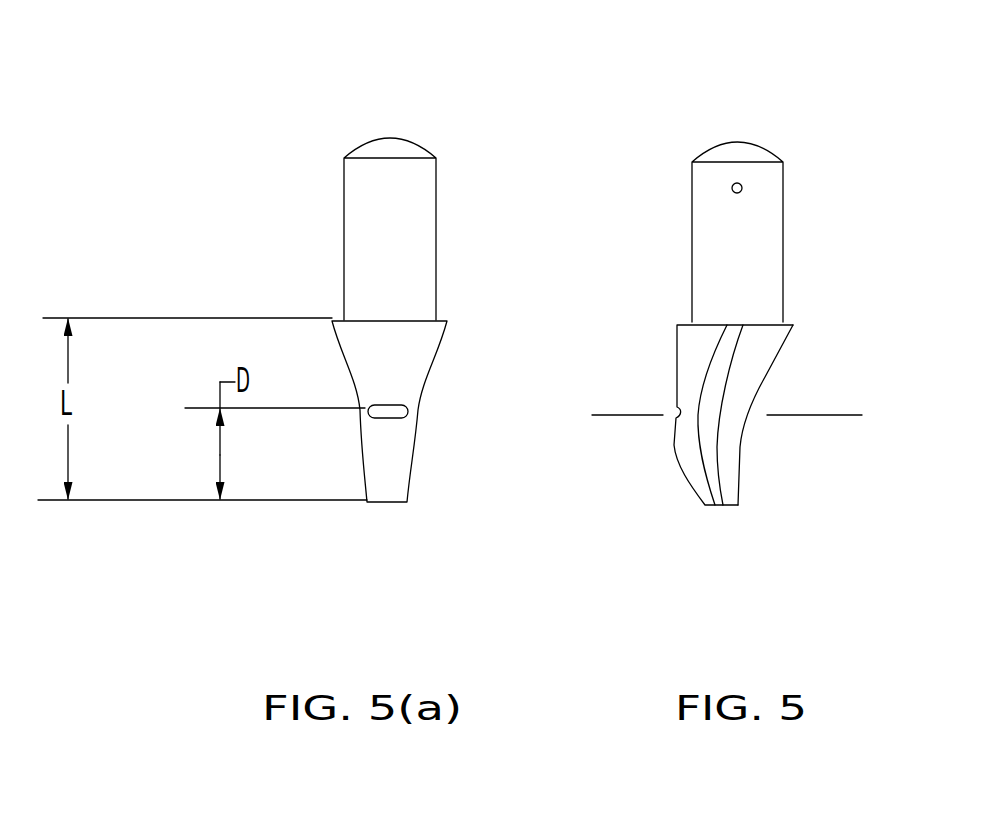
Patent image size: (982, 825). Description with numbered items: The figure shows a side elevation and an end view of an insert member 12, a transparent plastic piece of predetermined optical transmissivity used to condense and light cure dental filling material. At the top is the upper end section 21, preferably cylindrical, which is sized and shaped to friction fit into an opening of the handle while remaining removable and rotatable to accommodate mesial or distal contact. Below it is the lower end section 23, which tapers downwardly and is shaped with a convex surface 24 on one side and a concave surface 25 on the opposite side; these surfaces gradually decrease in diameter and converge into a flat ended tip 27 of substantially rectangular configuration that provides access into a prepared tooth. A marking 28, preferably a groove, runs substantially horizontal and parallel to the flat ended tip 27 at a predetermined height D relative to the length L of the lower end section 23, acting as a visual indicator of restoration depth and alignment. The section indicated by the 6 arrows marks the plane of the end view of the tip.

In FIG. 5A, the insert member 12 is at (390, 321).
In FIG. 5, the insert member 12 is at (718, 338).
In FIG. 5A, the upper end section 21 is at (390, 229).
In FIG. 5, the upper end section 21 is at (737, 232).
In FIG. 5A, the lower end section 23 is at (418, 357).
In FIG. 5A, the marking 28 is at (383, 418).
In FIG. 5, the convex surface 24 is at (683, 475).
In FIG. 5, the concave surface 25 is at (747, 450).
In FIG. 5, the flat ended tip 27 is at (722, 505).
In FIG. 5, the section line 6- 6 is at (727, 362).